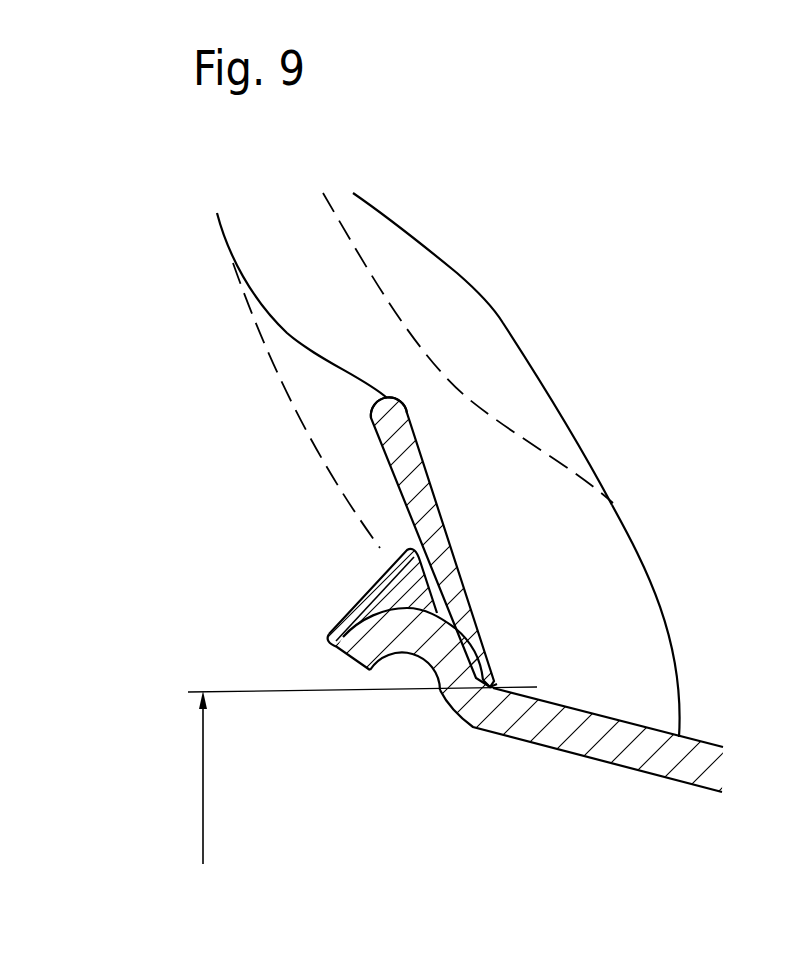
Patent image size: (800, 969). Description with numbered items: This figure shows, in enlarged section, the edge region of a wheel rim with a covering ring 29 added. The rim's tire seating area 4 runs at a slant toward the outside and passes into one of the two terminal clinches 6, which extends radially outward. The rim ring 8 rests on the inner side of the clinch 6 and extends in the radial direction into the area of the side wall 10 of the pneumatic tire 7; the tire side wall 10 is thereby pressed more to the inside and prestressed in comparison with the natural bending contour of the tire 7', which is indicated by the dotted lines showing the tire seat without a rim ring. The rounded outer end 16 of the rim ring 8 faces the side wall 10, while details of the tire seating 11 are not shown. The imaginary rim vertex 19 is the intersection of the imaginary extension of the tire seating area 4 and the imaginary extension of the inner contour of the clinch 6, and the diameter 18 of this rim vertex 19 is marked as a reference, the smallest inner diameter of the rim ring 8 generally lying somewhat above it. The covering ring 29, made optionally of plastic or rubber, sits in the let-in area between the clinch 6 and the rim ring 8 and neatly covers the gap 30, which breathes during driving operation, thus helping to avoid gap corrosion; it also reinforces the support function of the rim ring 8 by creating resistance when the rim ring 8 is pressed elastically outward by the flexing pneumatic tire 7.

The tire seating area 4 is at (632, 724).
The clinch 6 is at (360, 653).
The pneumatic tire 7 is at (482, 345).
The pneumatic tire seat without rim ring 7' is at (277, 380).
The rim ring 8 is at (405, 513).
The side wall 10 is at (517, 393).
The tire seating 11 is at (597, 608).
The rounded lip end 16 is at (373, 407).
The diameter of the rim vertex 18 is at (202, 800).
The rim vertex 19 is at (481, 684).
The covering ring 29 is at (377, 592).
The gap 30 is at (442, 620).